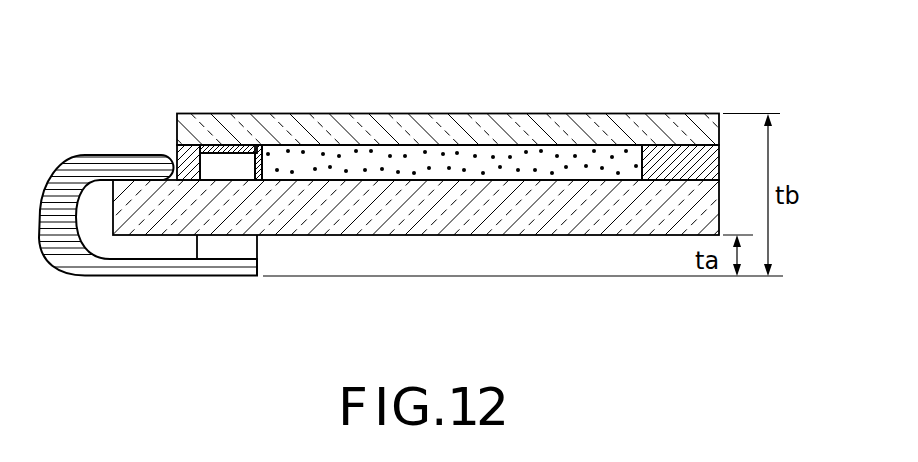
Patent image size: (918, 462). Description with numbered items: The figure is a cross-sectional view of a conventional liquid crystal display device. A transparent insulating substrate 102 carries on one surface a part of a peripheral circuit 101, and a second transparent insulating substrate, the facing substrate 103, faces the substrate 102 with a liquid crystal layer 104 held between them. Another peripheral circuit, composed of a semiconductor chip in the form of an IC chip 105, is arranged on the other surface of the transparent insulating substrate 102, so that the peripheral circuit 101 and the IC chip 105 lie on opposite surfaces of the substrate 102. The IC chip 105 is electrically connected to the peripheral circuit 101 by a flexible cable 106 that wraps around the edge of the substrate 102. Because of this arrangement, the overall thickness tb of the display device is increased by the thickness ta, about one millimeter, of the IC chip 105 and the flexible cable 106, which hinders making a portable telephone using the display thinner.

The peripheral circuit 101 is at (245, 163).
The transparent insulating substrate 102 is at (495, 203).
The facing substrate 103 is at (360, 130).
The liquid crystal layer 104 is at (558, 155).
The IC chip 105 is at (235, 252).
The flexible cable 106 is at (113, 165).